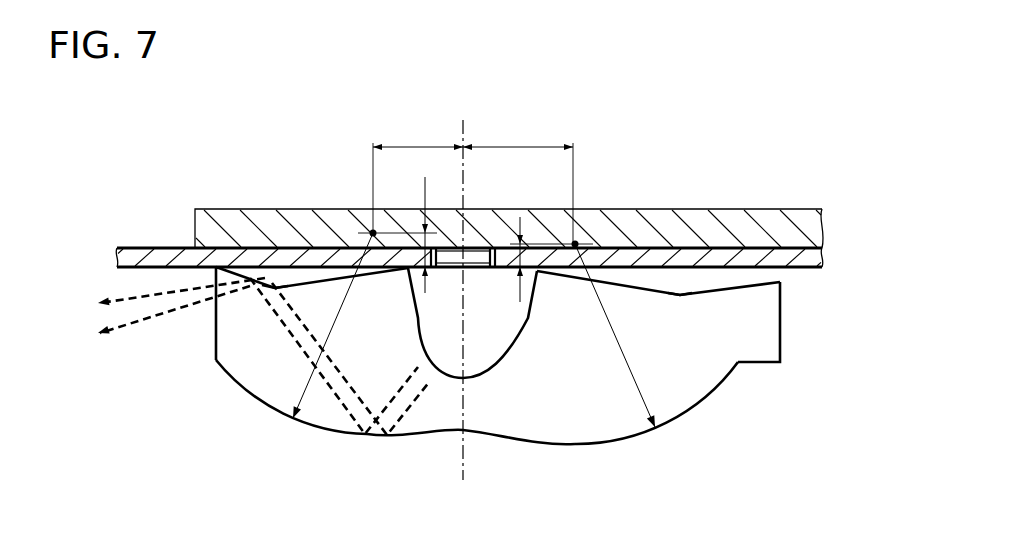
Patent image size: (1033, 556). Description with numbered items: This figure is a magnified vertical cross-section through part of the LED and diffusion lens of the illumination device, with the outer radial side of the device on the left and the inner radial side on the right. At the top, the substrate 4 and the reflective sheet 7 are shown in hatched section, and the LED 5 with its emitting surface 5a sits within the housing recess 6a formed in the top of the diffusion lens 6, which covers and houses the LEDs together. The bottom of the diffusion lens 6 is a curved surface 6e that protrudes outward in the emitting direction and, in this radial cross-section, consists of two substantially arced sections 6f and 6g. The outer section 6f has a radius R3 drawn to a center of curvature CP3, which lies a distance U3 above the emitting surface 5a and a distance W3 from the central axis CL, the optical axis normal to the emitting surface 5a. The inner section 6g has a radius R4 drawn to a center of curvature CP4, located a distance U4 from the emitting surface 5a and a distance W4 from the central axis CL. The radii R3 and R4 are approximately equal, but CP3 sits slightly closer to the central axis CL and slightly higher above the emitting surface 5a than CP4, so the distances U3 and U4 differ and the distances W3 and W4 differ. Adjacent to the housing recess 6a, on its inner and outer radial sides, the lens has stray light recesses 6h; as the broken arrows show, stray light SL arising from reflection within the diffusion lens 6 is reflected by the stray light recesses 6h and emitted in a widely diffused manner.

The substrate 4 is at (752, 209).
The LED 5 is at (452, 276).
The emitting surface 5a is at (471, 268).
The diffusion lens 6 is at (497, 332).
The housing recess 6a is at (515, 335).
The curved surface 6e is at (403, 443).
The substantially arced section 6f is at (276, 421).
The substantially arced section 6g is at (678, 425).
The stray light recess 6h is at (277, 287).
The reflective sheet 7 is at (131, 248).
The stray light SL is at (152, 315).
The central axis CL is at (466, 470).
The center of curvature CP3 is at (373, 233).
The center of curvature CP4 is at (575, 244).
The radius R3 is at (334, 325).
The radius R4 is at (615, 335).
The distance W3 is at (418, 179).
The distance W4 is at (518, 185).
The distance U3 is at (410, 234).
The distance U4 is at (505, 260).